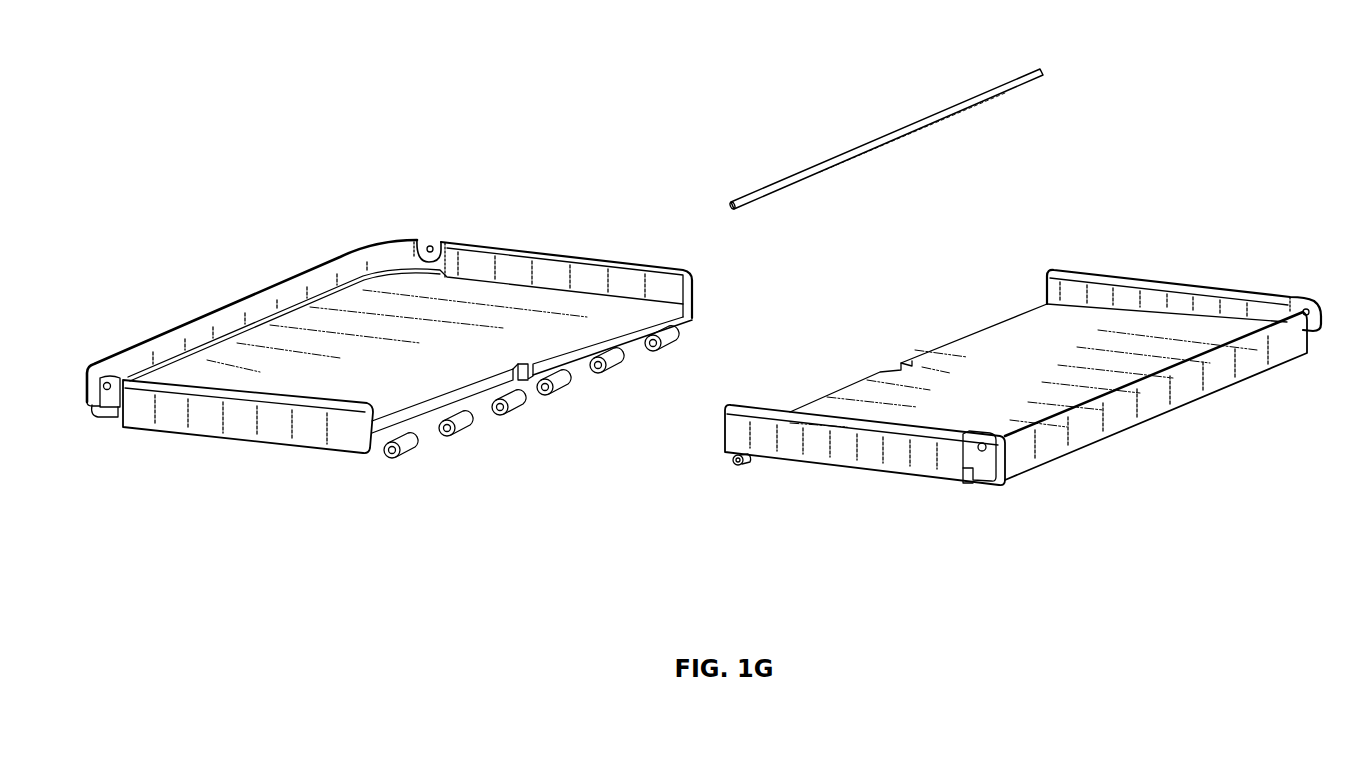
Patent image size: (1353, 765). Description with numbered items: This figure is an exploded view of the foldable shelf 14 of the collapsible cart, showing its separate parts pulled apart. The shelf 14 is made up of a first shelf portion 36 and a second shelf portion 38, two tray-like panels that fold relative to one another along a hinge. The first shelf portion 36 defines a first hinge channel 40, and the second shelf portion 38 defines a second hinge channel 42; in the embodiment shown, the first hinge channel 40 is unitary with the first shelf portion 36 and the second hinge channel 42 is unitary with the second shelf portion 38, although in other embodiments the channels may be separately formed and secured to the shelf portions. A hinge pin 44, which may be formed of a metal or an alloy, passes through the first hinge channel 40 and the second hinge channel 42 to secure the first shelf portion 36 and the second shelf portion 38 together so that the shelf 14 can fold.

The foldable shelf 14 is at (342, 118).
The first shelf portion 36 is at (364, 307).
The second shelf portion 38 is at (1006, 341).
The first hinge channel 40 is at (602, 390).
The second hinge channel 42 is at (737, 475).
The hinge pin 44 is at (869, 141).